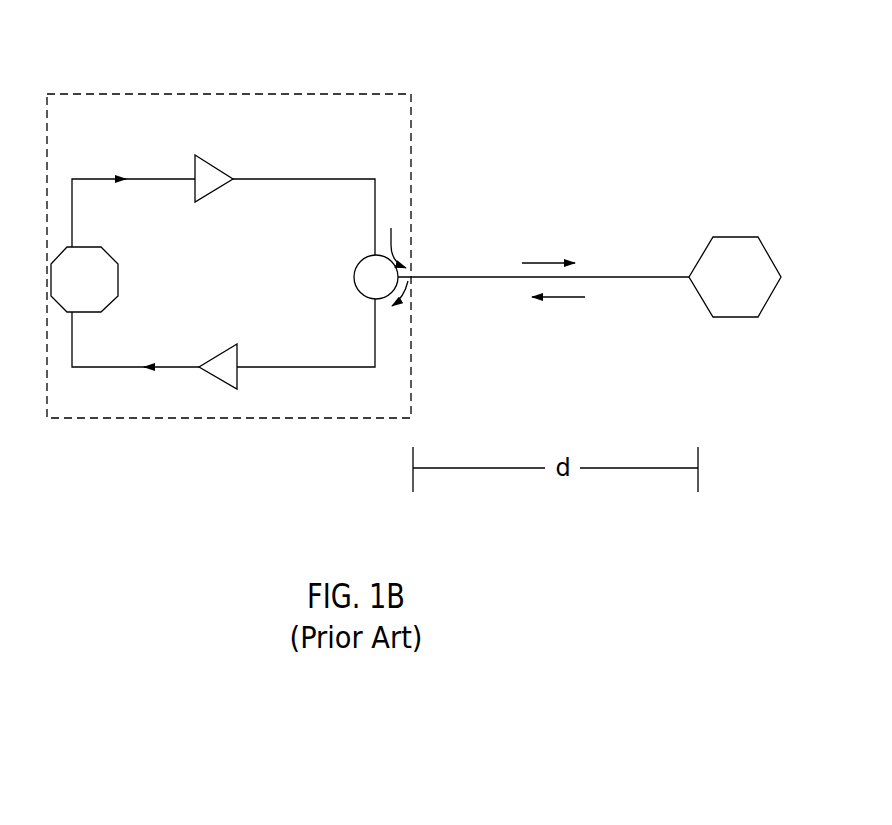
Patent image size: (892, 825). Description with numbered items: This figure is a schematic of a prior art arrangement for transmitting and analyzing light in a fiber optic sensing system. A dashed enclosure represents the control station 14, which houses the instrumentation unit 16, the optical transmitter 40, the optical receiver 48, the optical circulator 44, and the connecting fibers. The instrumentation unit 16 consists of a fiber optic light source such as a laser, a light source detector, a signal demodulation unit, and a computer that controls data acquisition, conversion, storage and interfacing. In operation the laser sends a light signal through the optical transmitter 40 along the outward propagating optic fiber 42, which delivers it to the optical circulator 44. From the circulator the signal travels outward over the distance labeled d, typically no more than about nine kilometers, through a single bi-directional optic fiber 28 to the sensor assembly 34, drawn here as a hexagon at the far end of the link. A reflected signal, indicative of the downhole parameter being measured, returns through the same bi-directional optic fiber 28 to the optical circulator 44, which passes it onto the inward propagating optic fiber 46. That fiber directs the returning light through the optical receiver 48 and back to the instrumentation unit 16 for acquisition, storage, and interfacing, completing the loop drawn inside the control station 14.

The control station 14 is at (411, 94).
The instrumentation unit 16 is at (97, 292).
The bi-directional optic fiber 28 is at (588, 277).
The sensor assembly 34 is at (737, 317).
The optical transmitter 40 is at (206, 164).
The outward propagating optic fiber 42 is at (330, 178).
The optical circulator 44 is at (382, 273).
The inward propagating optic fiber 46 is at (376, 367).
The optical receiver 48 is at (227, 382).